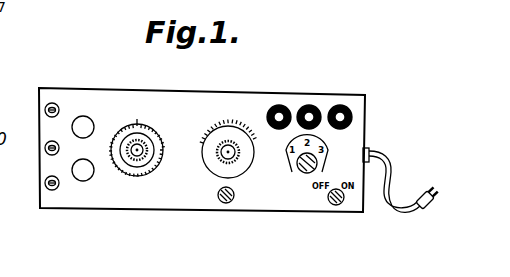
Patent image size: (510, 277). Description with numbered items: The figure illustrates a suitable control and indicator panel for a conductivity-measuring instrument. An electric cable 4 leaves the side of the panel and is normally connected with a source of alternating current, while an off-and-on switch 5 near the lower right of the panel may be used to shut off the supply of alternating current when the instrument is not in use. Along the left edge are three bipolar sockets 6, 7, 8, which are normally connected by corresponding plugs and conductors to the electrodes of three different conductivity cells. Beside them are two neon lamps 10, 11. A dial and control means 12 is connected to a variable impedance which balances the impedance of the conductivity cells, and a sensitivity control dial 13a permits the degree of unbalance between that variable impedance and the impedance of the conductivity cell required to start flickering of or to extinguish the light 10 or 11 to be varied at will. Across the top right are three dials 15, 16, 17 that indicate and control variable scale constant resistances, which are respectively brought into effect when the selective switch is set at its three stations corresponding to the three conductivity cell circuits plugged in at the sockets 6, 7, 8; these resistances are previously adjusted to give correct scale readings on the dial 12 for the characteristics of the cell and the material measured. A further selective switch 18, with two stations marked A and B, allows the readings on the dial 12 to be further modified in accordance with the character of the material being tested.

The electric cable 4 is at (392, 194).
The off-and-on switch 5 is at (338, 205).
The bipolar socket 6 is at (45, 110).
The bipolar socket 7 is at (45, 148).
The bipolar socket 8 is at (45, 184).
The neon lamp 10 is at (84, 181).
The neon lamp 11 is at (88, 116).
The dial and control means 12 is at (215, 165).
The sensitivity control dial 13a is at (140, 165).
The scale constant dial 15 is at (279, 105).
The scale constant dial 16 is at (309, 105).
The scale constant dial 17 is at (340, 105).
The selective switch 18 is at (229, 204).